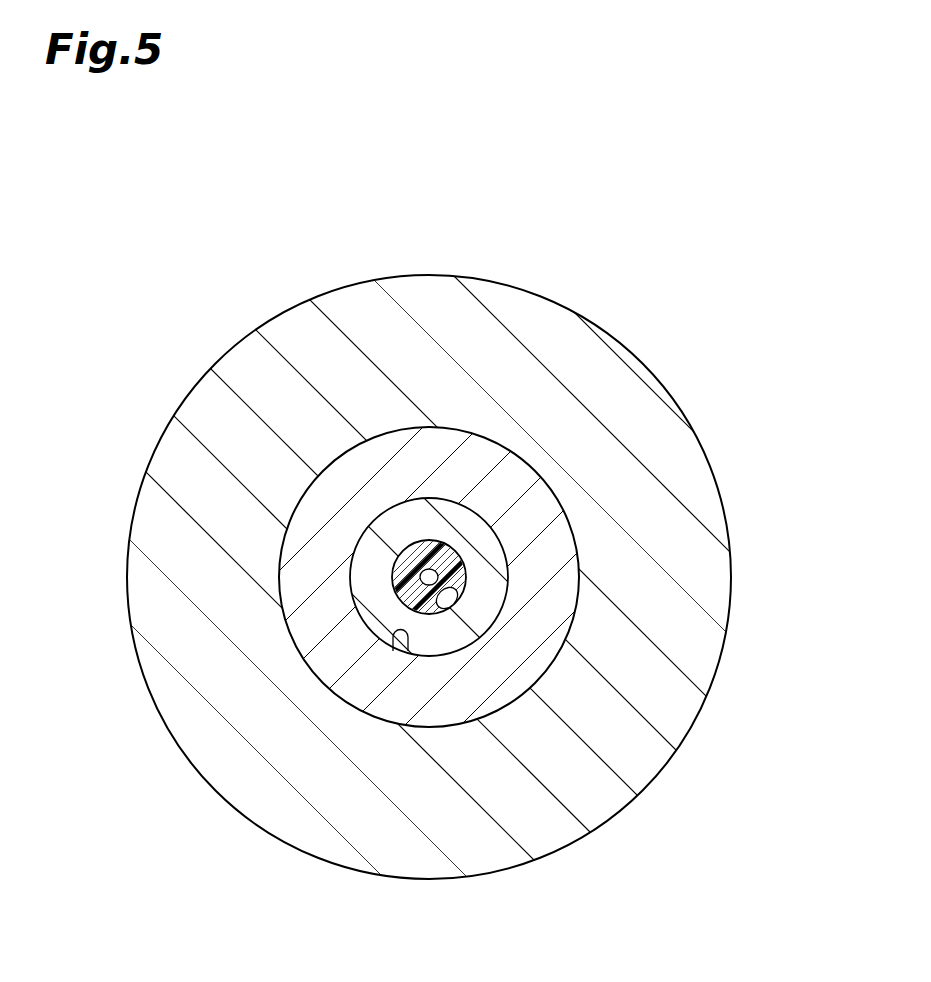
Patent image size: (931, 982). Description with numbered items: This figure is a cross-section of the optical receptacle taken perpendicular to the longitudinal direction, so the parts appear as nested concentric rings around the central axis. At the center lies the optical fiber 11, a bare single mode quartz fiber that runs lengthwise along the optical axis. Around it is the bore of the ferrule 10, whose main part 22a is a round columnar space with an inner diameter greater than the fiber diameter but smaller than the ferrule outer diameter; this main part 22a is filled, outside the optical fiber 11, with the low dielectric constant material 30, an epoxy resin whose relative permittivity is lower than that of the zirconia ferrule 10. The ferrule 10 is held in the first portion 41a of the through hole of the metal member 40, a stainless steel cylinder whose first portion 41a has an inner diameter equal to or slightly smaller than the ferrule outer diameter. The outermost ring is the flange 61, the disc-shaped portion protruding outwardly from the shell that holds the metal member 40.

The ferrule 10 is at (427, 650).
The optical fiber 11 is at (403, 575).
The main part 22a is at (457, 603).
The low dielectric constant material 30 is at (385, 597).
The metal member 40 is at (510, 657).
The first portion 41a is at (393, 640).
The flange 61 is at (693, 655).